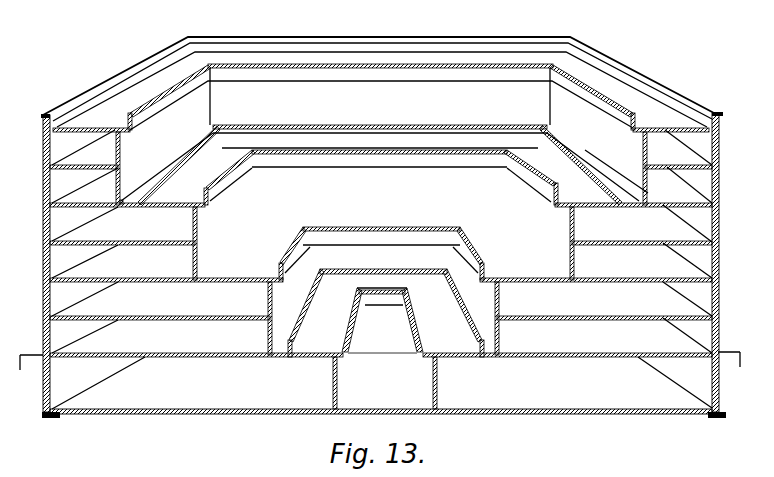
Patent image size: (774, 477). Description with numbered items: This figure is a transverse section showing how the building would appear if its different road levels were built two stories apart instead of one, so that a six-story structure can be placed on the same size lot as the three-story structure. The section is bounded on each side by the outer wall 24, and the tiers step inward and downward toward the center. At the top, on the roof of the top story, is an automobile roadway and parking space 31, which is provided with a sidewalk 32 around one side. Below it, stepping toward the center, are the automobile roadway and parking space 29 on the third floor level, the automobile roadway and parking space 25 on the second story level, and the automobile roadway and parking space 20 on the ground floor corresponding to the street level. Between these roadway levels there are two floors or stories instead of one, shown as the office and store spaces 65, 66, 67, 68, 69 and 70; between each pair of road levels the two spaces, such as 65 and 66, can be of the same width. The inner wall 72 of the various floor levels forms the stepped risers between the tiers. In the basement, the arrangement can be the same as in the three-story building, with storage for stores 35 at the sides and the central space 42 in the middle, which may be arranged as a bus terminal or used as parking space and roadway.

The automobile roadway and parking space 20 is at (381, 319).
The outer wall 24 is at (43, 275).
The automobile roadway and parking space 25 is at (381, 305).
The automobile roadway and parking space 29 is at (384, 168).
The automobile roadway and parking space 31 is at (125, 103).
The sidewalk 32 is at (152, 77).
The storage for stores 35 is at (382, 383).
The central space 42 is at (385, 383).
The floor or story 65 is at (651, 335).
The floor or story 66 is at (604, 301).
The floor or story 67 is at (662, 260).
The floor or story 68 is at (641, 242).
The floor or story 69 is at (633, 187).
The floor or story 70 is at (677, 167).
The inner wall 72 is at (213, 191).